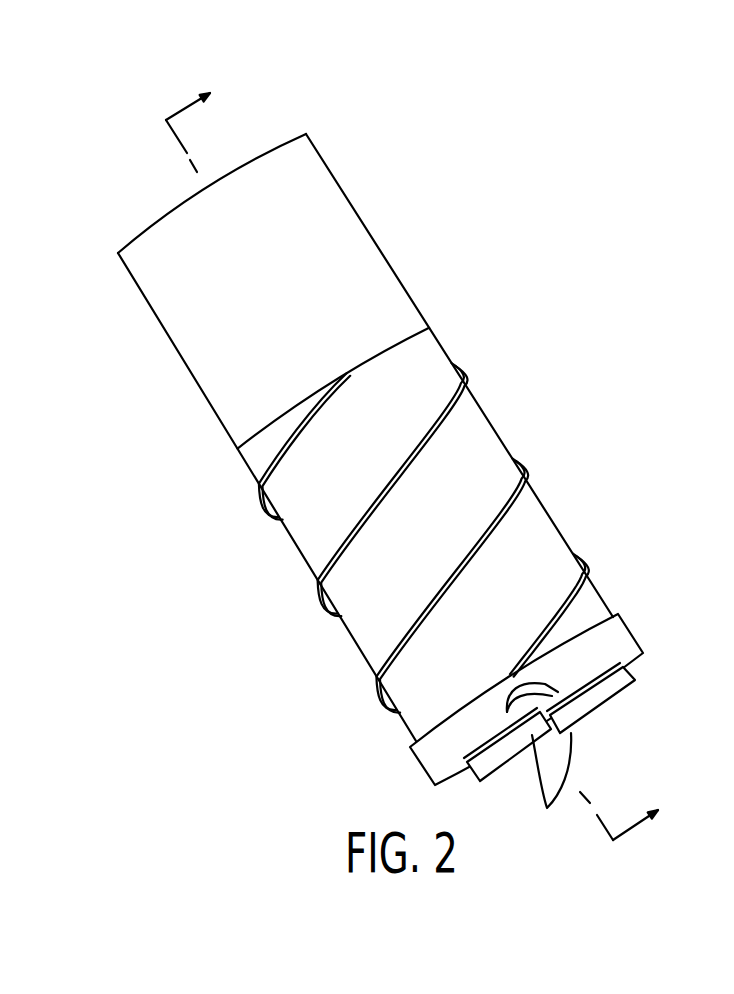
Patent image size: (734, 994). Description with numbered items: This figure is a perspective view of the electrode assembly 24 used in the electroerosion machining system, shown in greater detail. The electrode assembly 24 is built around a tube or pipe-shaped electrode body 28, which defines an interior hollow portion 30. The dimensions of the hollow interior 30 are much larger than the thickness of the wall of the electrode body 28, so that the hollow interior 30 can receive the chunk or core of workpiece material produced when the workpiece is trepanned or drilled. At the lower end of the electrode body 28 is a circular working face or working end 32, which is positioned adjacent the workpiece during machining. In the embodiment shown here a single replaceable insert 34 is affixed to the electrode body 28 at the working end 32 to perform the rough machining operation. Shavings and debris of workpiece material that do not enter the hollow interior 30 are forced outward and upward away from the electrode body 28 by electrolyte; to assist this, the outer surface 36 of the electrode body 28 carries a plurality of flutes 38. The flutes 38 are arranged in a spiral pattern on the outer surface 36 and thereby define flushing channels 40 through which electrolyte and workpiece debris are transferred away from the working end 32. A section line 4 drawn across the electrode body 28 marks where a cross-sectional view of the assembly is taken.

The section line 4- 4 is at (422, 456).
The electrode assembly 24 is at (543, 232).
The electrode body 28 is at (392, 288).
The interior hollow portion 30 is at (577, 716).
The working end 32 is at (645, 663).
The replaceable insert 34 is at (544, 788).
The outer surface 36 is at (244, 473).
The flutes 38 is at (380, 658).
The flushing channels 40 is at (533, 525).